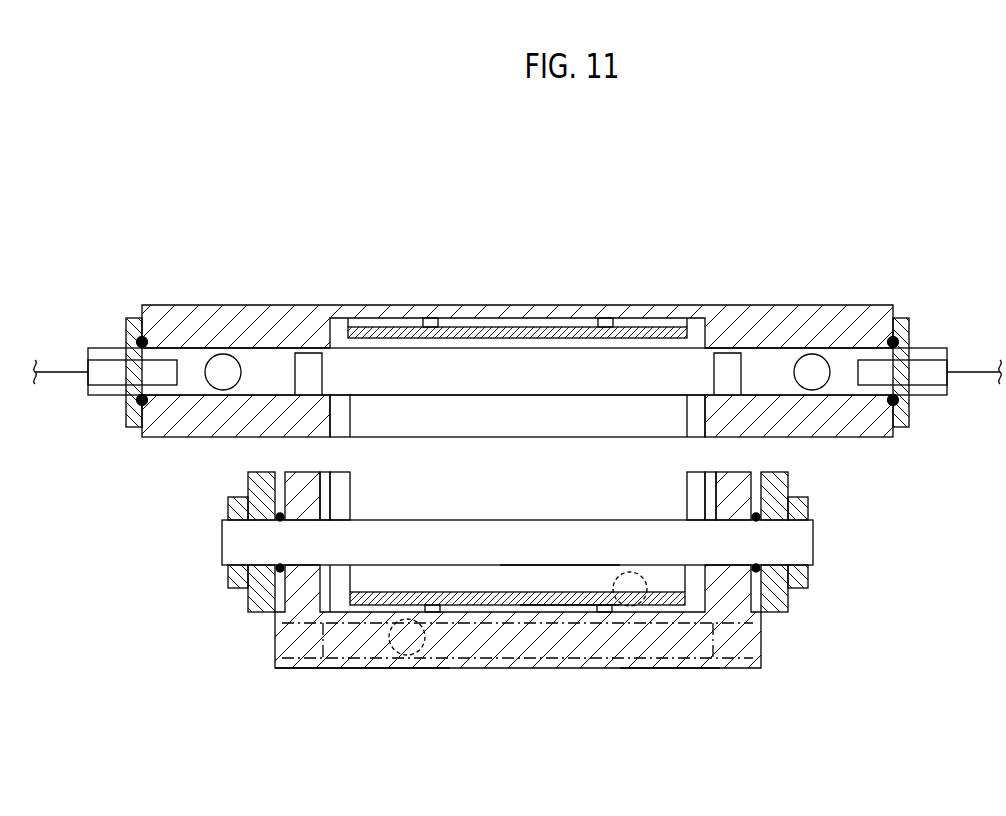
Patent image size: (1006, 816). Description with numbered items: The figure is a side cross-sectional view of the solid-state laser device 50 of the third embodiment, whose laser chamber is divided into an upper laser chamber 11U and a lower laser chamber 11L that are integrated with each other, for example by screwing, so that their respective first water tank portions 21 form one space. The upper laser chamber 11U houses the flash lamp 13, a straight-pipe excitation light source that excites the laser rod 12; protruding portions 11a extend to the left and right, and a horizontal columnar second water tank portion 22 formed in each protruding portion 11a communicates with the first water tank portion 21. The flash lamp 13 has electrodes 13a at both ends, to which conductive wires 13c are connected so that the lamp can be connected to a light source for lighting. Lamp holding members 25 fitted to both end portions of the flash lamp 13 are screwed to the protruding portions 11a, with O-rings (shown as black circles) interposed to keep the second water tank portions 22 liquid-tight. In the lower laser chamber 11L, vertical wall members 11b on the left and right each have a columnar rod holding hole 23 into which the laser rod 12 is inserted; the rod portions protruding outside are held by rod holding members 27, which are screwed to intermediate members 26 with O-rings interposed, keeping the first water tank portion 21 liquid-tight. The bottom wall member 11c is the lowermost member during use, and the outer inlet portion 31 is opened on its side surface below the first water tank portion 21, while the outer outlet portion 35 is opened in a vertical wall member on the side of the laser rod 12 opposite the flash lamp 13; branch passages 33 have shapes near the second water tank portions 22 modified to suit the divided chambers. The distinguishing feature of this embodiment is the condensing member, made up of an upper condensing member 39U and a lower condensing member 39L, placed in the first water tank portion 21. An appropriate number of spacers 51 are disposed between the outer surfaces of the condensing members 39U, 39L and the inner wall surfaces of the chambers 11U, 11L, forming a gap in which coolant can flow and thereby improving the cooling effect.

The solid-state laser device 50 is at (508, 220).
The upper laser chamber 11U is at (478, 303).
The lower laser chamber 11L is at (479, 671).
The protruding portion 11a is at (233, 305).
The vertical wall member 11b is at (331, 492).
The bottom wall member 11c is at (352, 650).
The laser rod 12 is at (556, 553).
The flash lamp 13 is at (545, 357).
The electrode 13a is at (108, 384).
The conductive wire 13c is at (43, 365).
The first water tank portion 21 is at (565, 606).
The second water tank portion 22 is at (331, 338).
The rod holding hole 23 is at (285, 520).
The lamp holding member 25 is at (136, 427).
The intermediate member 26 is at (268, 614).
The rod holding member 27 is at (237, 590).
The outer inlet portion 31 is at (371, 670).
The branch passage 33 is at (287, 400).
The outer outlet portion 35 is at (667, 665).
The upper condensing member 39U is at (663, 333).
The lower condensing member 39L is at (670, 606).
The spacer 51 is at (430, 318).